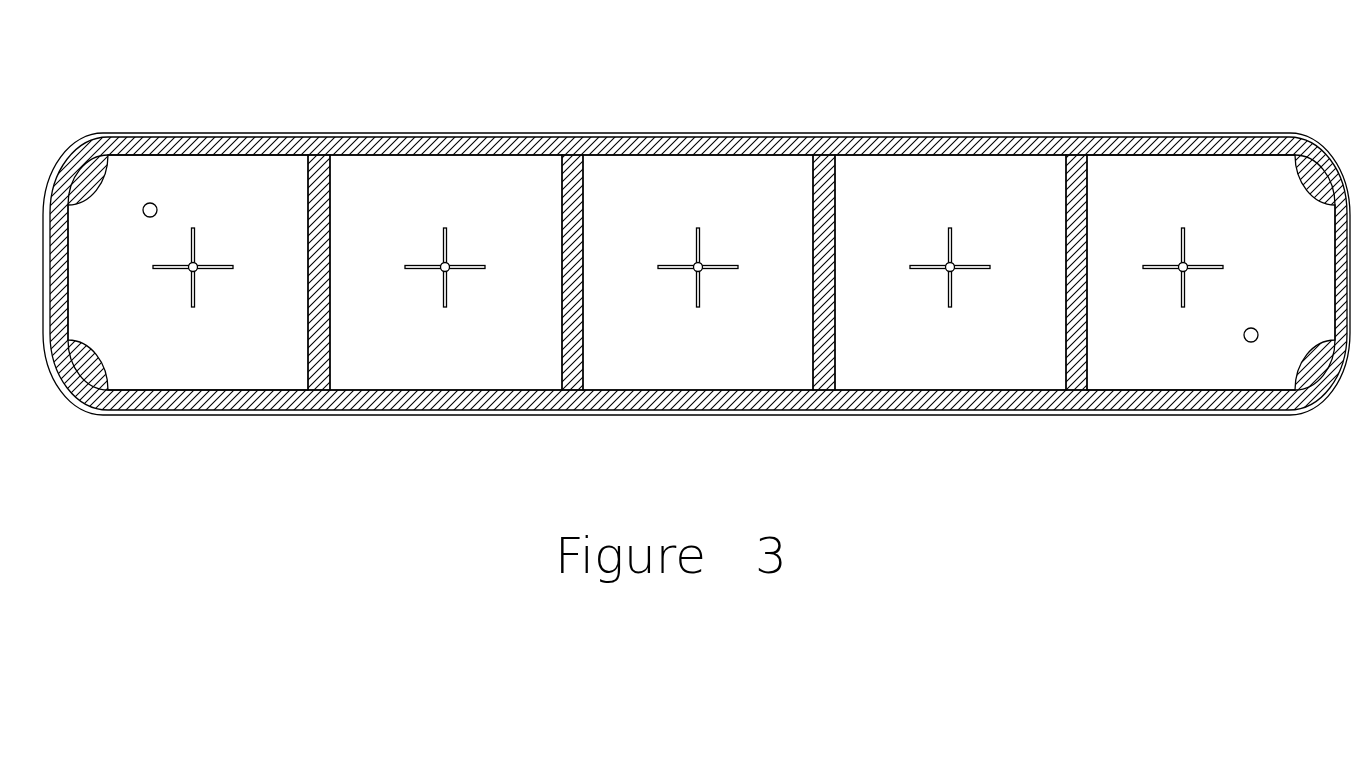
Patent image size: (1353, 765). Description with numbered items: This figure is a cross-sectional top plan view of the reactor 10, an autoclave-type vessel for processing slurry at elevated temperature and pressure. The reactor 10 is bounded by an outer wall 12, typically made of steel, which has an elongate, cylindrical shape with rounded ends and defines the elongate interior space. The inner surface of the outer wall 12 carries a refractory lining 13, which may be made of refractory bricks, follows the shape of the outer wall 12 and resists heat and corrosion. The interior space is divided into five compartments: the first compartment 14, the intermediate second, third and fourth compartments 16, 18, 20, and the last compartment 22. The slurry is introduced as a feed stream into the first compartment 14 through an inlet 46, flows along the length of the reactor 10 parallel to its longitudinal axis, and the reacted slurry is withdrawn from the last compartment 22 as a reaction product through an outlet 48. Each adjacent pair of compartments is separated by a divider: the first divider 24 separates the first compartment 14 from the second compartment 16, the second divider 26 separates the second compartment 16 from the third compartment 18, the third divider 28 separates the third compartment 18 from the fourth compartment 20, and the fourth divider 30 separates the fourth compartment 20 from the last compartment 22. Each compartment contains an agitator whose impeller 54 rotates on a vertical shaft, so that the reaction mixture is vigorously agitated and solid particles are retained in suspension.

The reactor 10 is at (425, 101).
The outer wall 12 is at (698, 322).
The refractory lining 13 is at (955, 405).
The first compartment 14 is at (188, 272).
The second compartment 16 is at (446, 272).
The third compartment 18 is at (698, 272).
The fourth compartment 20 is at (950, 272).
The last compartment 22 is at (1211, 272).
The first divider 24 is at (317, 396).
The second divider 26 is at (571, 396).
The third divider 28 is at (822, 396).
The fourth divider 30 is at (1074, 396).
The inlet 46 is at (155, 198).
The outlet 48 is at (1256, 322).
The impeller 54 is at (198, 236).